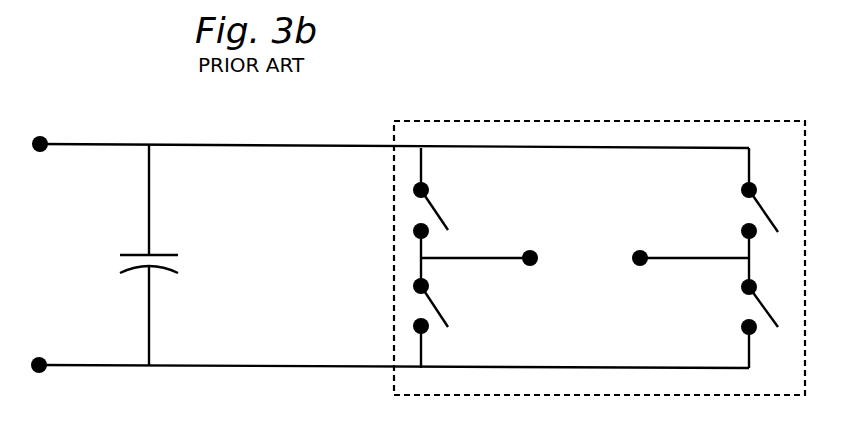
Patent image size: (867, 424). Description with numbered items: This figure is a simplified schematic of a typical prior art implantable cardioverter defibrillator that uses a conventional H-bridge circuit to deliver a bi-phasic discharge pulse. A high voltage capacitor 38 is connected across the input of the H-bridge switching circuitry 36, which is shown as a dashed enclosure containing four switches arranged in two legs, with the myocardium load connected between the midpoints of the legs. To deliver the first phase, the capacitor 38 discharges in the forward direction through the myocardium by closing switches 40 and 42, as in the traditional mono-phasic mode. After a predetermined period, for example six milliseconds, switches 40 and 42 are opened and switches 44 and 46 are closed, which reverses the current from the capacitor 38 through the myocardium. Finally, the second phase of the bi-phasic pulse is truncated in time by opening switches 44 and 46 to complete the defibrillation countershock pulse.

The H-bridge switching circuitry 36 is at (627, 121).
The high voltage capacitor 38 is at (163, 255).
The switch 40 is at (432, 204).
The switch 42 is at (768, 313).
The switch 44 is at (430, 298).
The switch 46 is at (766, 219).